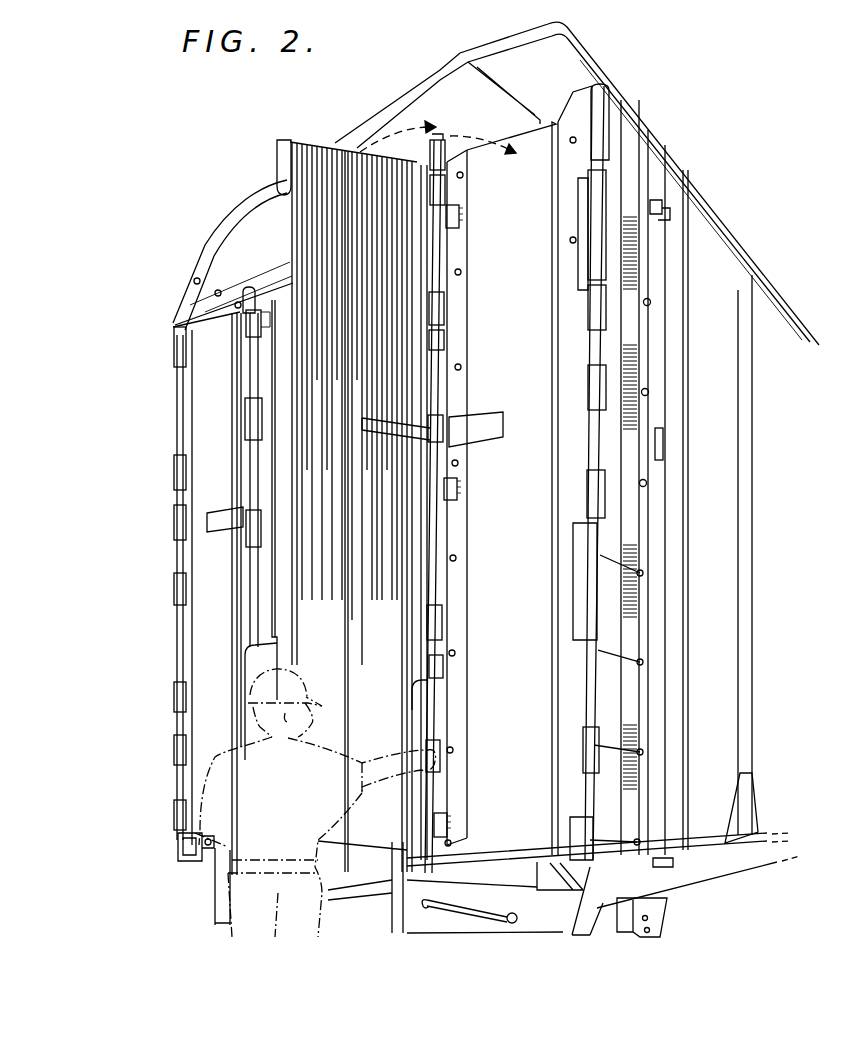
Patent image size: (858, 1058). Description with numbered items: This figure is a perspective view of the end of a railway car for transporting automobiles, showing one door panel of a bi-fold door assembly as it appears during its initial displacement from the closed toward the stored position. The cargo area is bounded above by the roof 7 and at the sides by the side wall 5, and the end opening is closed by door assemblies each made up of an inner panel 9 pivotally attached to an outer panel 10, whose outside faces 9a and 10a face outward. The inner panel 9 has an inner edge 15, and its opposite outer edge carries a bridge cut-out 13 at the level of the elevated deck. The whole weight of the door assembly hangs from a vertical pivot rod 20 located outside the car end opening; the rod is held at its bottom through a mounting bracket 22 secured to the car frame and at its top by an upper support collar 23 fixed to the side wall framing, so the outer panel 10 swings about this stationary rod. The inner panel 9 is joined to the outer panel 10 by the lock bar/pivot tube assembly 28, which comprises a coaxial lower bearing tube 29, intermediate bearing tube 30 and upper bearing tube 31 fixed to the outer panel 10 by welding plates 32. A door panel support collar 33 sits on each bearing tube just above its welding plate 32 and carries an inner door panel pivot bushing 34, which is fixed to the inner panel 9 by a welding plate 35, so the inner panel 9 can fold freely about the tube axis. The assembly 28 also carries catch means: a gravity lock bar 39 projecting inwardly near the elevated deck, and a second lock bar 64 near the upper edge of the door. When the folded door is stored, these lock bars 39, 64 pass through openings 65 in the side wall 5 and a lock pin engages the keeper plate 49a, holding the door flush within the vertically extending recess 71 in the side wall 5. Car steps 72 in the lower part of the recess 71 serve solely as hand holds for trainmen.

The side wall 5 is at (705, 262).
The roof 7 is at (416, 97).
The inner panel 9 is at (353, 486).
The outside face of inner panel 9a is at (336, 359).
The outer panel 10 is at (539, 148).
The outside face of outer panel 10a is at (532, 363).
The bridge cut-out 13 is at (366, 424).
The inner edge 15 is at (277, 168).
The vertical pivot rod 20 is at (596, 208).
The mounting bracket 22 is at (555, 862).
The upper support collar 23 is at (609, 95).
The lock bar/pivot tube assembly 28 is at (446, 624).
The lower bearing tube 29 is at (428, 818).
The intermediate bearing tube 30 is at (428, 568).
The upper bearing tube 31 is at (440, 252).
The welding plate 32 is at (459, 223).
The door panel support collar 33 is at (444, 335).
The inner door panel pivot bushing 34 is at (444, 310).
The welding plate 35 is at (458, 195).
The gravity lock bar 39 is at (447, 426).
The keeper plate 49a is at (675, 865).
The second lock bar 64 is at (445, 149).
The opening 65 is at (662, 205).
The vertically extending recess 71 is at (612, 352).
The car step 72 is at (627, 660).